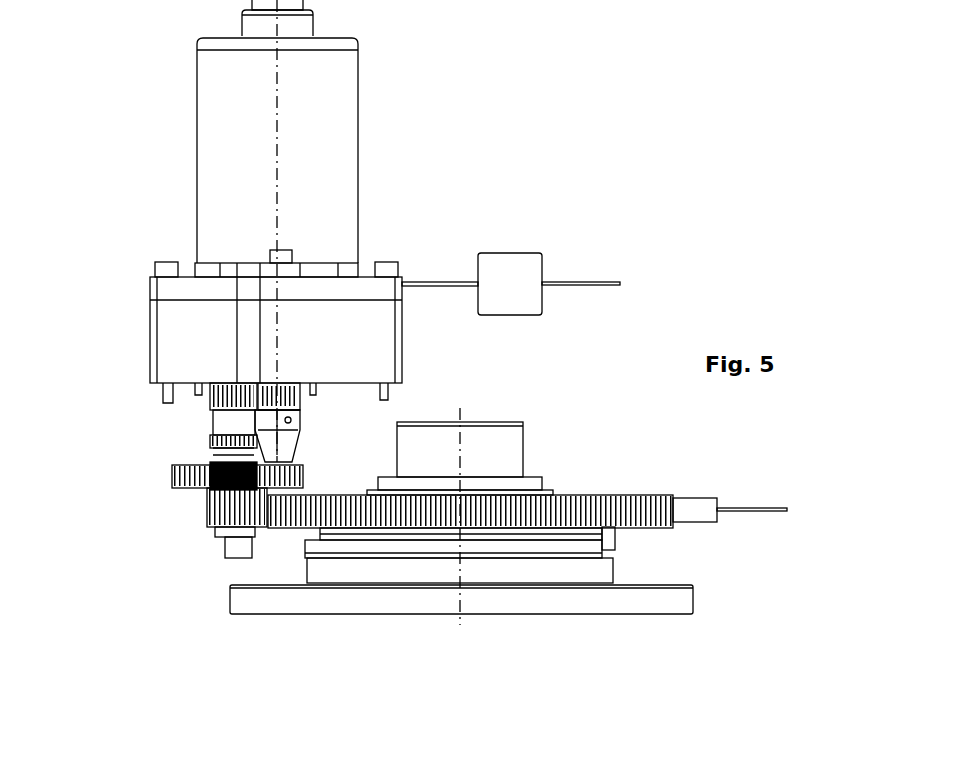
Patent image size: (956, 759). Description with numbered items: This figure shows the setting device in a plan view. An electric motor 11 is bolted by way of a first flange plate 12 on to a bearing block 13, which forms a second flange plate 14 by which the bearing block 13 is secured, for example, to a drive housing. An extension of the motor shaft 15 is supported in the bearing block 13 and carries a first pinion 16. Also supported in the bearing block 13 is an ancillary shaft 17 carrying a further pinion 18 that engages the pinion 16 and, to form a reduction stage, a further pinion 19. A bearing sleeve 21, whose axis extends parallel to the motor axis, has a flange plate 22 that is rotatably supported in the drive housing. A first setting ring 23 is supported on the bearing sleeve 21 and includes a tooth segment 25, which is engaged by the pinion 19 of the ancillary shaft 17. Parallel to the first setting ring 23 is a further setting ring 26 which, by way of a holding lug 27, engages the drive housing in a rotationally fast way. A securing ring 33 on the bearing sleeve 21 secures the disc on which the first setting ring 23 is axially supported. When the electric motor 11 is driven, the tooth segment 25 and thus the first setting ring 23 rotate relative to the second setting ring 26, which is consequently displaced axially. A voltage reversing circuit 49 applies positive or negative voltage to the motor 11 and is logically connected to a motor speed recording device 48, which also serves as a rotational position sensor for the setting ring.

The electric motor 11 is at (222, 105).
The first flange plate 12 is at (197, 276).
The bearing block 13 is at (176, 343).
The second flange plate 14 is at (196, 386).
The motor shaft 15 is at (285, 398).
The first pinion 16 is at (295, 450).
The ancillary shaft 17 is at (230, 545).
The further pinion 18 is at (172, 478).
The further pinion 19 is at (207, 515).
The bearing sleeve 21 is at (520, 447).
The flange plate 22 is at (672, 597).
The first setting ring 23 is at (320, 530).
The tooth segment 25 is at (635, 495).
The further setting ring 26 is at (568, 545).
The holding lug 27 is at (612, 537).
The securing ring 33 is at (552, 485).
The motor speed recording device 48 is at (690, 510).
The voltage reversing circuit 49 is at (508, 262).